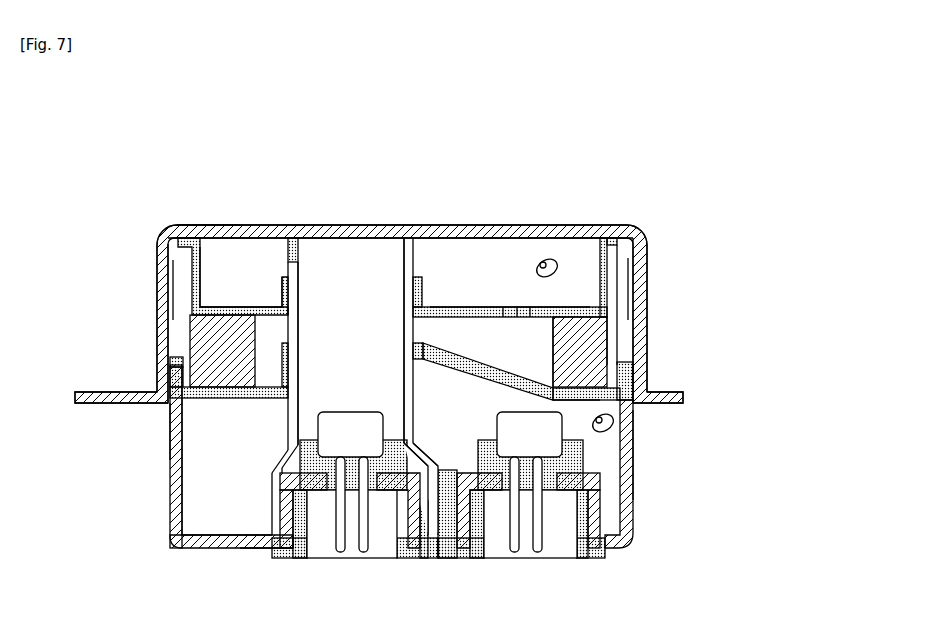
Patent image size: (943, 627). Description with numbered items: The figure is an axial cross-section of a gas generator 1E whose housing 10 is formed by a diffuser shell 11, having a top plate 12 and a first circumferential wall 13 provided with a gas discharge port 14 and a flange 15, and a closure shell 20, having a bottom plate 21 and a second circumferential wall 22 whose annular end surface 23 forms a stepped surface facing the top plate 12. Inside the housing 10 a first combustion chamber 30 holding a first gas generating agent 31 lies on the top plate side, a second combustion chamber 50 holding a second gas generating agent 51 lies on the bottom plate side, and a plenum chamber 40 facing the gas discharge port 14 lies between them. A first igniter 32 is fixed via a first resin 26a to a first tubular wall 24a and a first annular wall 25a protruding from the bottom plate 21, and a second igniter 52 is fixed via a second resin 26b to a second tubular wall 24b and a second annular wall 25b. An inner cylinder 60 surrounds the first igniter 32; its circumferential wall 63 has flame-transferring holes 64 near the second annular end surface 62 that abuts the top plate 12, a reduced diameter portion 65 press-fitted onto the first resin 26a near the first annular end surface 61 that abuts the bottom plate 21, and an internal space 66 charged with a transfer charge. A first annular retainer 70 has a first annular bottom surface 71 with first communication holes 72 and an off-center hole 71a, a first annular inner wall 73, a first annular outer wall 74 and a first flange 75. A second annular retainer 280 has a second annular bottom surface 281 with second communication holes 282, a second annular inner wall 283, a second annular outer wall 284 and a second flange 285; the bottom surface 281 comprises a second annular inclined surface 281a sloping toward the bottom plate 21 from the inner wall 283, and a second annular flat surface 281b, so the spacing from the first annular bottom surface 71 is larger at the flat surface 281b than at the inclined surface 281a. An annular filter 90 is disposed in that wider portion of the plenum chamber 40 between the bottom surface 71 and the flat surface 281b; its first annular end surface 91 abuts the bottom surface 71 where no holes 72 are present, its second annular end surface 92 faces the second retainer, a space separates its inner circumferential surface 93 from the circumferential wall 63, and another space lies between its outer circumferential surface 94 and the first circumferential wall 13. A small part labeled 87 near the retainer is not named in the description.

The gas generator 1E is at (516, 190).
The housing 10 is at (396, 294).
The diffuser shell 11 is at (648, 386).
The top plate 12 is at (270, 225).
The first circumferential wall 13 is at (642, 335).
The gas discharge port 14 is at (640, 290).
The flange 15 is at (80, 392).
The closure shell 20 is at (640, 415).
The bottom plate 21 is at (216, 548).
The second circumferential wall 22 is at (170, 495).
The annular end surface 23 is at (636, 366).
The first tubular wall 24a is at (280, 497).
The second tubular wall 24b is at (593, 513).
The first annular wall 25a is at (278, 478).
The second annular wall 25b is at (600, 481).
The first resin 26a is at (290, 450).
The second resin 26b is at (477, 443).
The first combustion chamber 30 is at (515, 277).
The first gas generating agent 31 is at (558, 268).
The first igniter 32 is at (358, 408).
The plenum chamber 40 is at (278, 338).
The second combustion chamber 50 is at (218, 520).
The second gas generating agent 51 is at (603, 436).
The second igniter 52 is at (492, 425).
The inner cylinder 60 is at (400, 322).
The first annular end surface 61 is at (265, 548).
The second annular end surface 62 is at (293, 238).
The circumferential wall 63 is at (288, 420).
The flame-transferring holes 64 is at (288, 262).
The reduced diameter portion 65 is at (432, 455).
The internal space 66 is at (362, 270).
The first annular retainer 70 is at (234, 297).
The first annular bottom surface 71 is at (482, 307).
The hole 71a is at (290, 318).
The first communication holes 72 is at (507, 305).
The first annular inner wall 73 is at (425, 281).
The first annular outer wall 74 is at (158, 250).
The first flange 75 is at (186, 228).
The support piece 87 is at (426, 342).
The annular filter 90 is at (533, 329).
The first annular end surface 91 is at (577, 306).
The second annular end surface 92 is at (558, 401).
The inner circumferential surface 93 is at (553, 366).
The outer circumferential surface 94 is at (617, 348).
The second annular retainer 280 is at (205, 405).
The second annular bottom surface 281 is at (298, 400).
The second annular inclined surface 281a is at (548, 393).
The second annular flat surface 281b is at (636, 432).
The second communication holes 282 is at (470, 376).
The second annular inner wall 283 is at (290, 358).
The second annular outer wall 284 is at (170, 420).
The second flange 285 is at (172, 360).